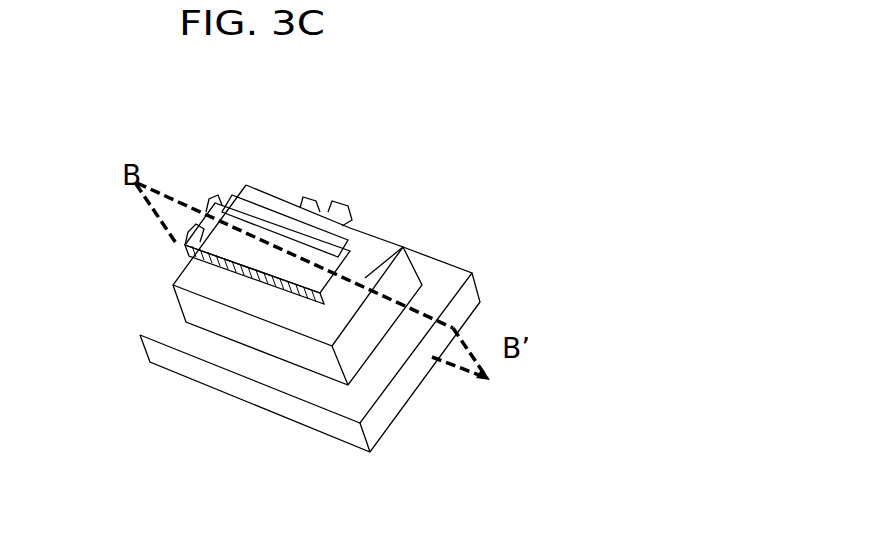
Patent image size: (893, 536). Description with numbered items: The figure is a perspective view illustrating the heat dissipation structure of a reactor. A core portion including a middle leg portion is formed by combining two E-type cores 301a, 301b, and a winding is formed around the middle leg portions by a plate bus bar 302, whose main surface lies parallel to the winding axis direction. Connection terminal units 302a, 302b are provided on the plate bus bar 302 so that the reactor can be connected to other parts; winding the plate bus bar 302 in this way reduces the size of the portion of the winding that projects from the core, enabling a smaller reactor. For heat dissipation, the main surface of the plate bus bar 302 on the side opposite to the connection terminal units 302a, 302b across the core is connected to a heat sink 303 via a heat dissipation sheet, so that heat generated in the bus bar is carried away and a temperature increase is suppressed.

The plate bus bar 302 is at (298, 257).
The connection terminal unit 302a is at (320, 203).
The connection terminal unit 302b is at (186, 244).
The E-type core 301a is at (403, 247).
The E-type core 301b is at (350, 345).
The heat sink 303 is at (430, 357).